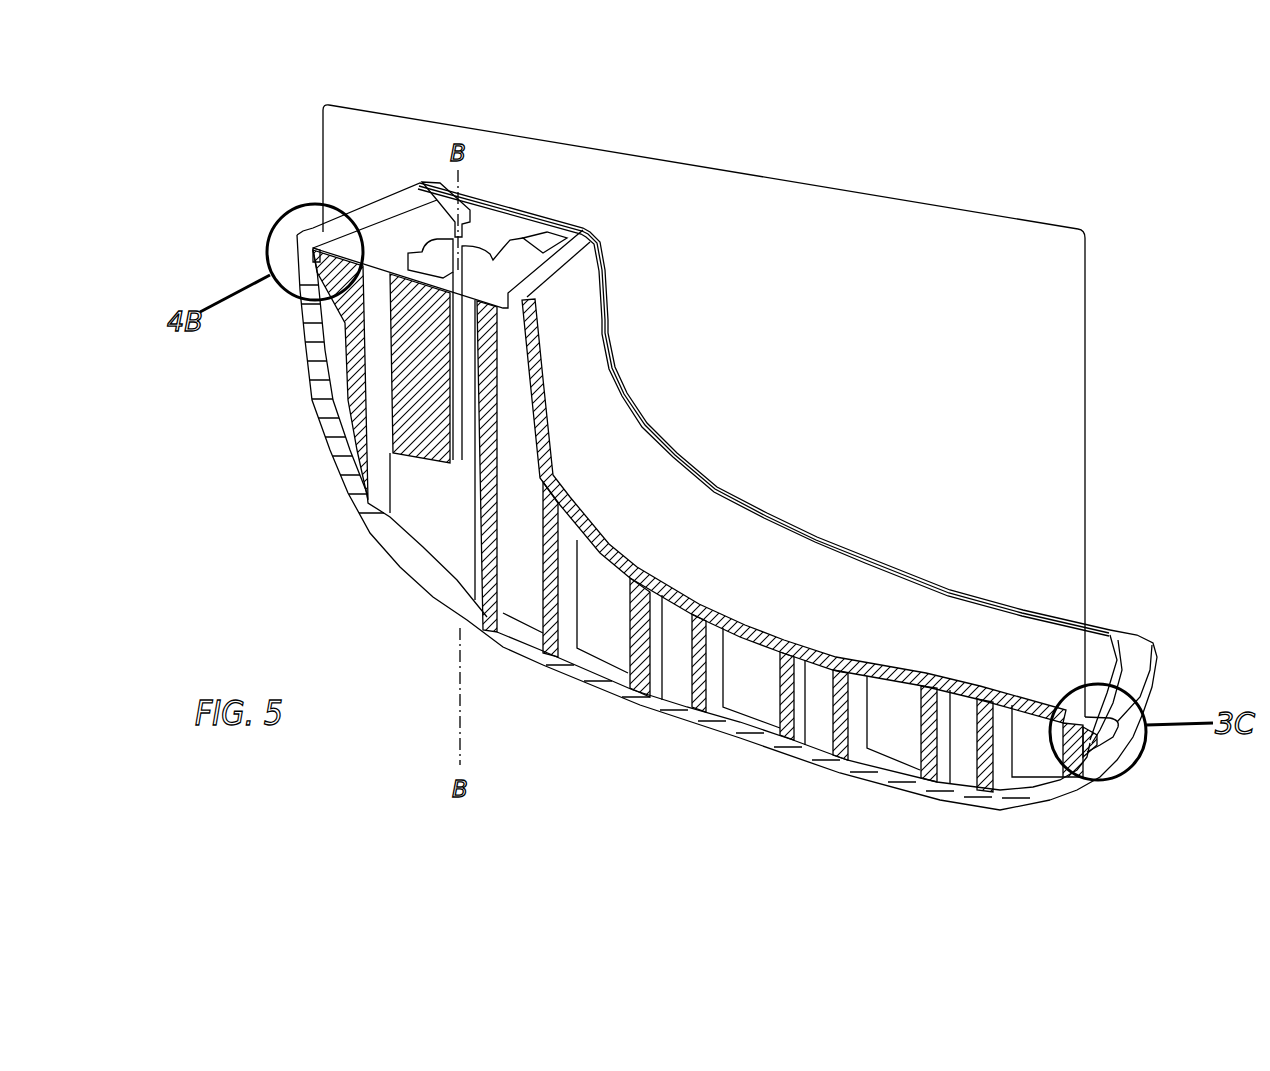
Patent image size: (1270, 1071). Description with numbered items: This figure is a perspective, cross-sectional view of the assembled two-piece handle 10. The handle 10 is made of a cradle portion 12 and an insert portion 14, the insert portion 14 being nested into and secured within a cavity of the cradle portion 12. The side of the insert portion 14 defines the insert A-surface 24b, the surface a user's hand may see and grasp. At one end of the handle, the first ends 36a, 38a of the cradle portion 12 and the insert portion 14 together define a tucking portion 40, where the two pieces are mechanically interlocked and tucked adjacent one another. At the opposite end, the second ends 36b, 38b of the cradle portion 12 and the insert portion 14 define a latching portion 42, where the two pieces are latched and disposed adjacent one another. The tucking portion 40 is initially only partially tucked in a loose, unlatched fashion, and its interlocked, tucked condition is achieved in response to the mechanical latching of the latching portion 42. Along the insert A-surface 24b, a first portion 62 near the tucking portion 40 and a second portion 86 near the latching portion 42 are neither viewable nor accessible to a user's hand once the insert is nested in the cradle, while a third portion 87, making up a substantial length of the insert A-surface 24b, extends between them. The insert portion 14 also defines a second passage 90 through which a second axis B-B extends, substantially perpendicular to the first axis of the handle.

The handle 10 is at (749, 411).
The cradle portion 12 is at (656, 727).
The insert portion 14 is at (676, 503).
The insert A-surface 24b is at (838, 552).
The first end of the cradle portion 36a is at (1153, 723).
The first end of the insert portion 38a is at (1149, 778).
The second end of the cradle portion 36b is at (351, 412).
The second end of the insert portion 38b is at (271, 195).
The tucking portion 40 is at (1123, 682).
The latching portion 42 is at (416, 392).
The first portion of the insert A-surface 62 is at (1089, 750).
The second portion of the insert A-surface 86 is at (318, 258).
The third portion of the insert A-surface 87 is at (686, 157).
The second passage 90 is at (436, 252).